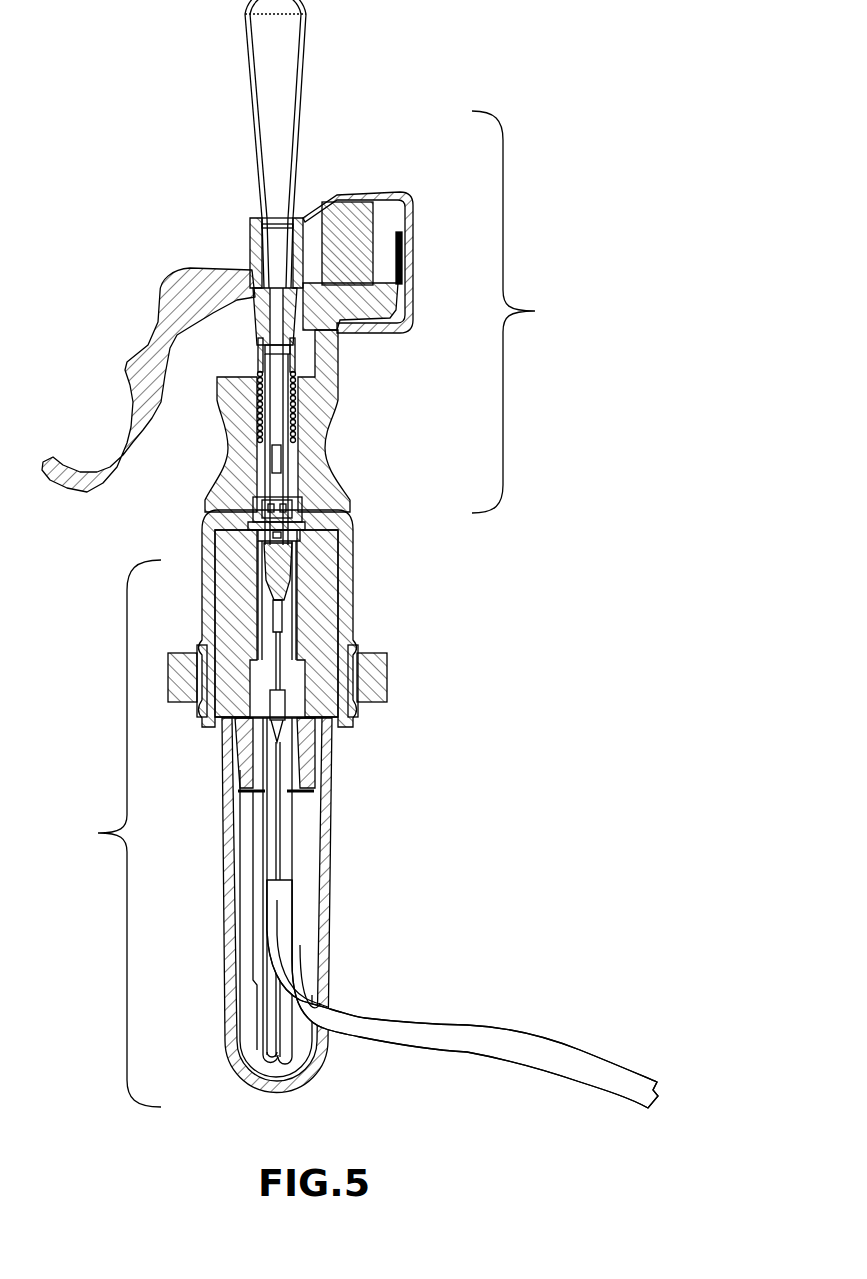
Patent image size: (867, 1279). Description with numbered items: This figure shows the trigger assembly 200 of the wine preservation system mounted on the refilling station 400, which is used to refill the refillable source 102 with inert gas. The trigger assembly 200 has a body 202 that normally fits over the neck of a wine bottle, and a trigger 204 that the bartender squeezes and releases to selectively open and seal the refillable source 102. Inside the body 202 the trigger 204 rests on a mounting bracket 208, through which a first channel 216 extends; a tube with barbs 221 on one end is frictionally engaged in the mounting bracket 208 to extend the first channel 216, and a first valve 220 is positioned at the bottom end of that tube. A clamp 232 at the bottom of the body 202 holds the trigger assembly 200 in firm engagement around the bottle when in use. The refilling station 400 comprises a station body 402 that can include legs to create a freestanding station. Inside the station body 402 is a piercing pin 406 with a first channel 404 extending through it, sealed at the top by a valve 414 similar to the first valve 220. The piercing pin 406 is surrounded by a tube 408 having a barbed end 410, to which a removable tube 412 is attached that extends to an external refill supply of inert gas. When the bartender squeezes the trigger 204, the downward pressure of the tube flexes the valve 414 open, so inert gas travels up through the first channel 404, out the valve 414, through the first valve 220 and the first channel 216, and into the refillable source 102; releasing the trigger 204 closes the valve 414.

The refillable source 102 is at (287, 50).
The trigger assembly 200 is at (528, 312).
The body 202 is at (250, 442).
The trigger 204 is at (166, 336).
The mounting bracket 208 is at (285, 333).
The first channel 216 is at (277, 422).
The first valve 220 is at (292, 398).
The barbs 221 is at (292, 363).
The clamp 232 is at (378, 680).
The refilling station 400 is at (104, 833).
The station body 402 is at (322, 562).
The first channel 404 is at (278, 623).
The piercing pin 406 is at (283, 600).
The tube 408 is at (290, 640).
The barbed end 410 is at (267, 710).
The removable tube 412 is at (278, 887).
The valve 414 is at (277, 557).